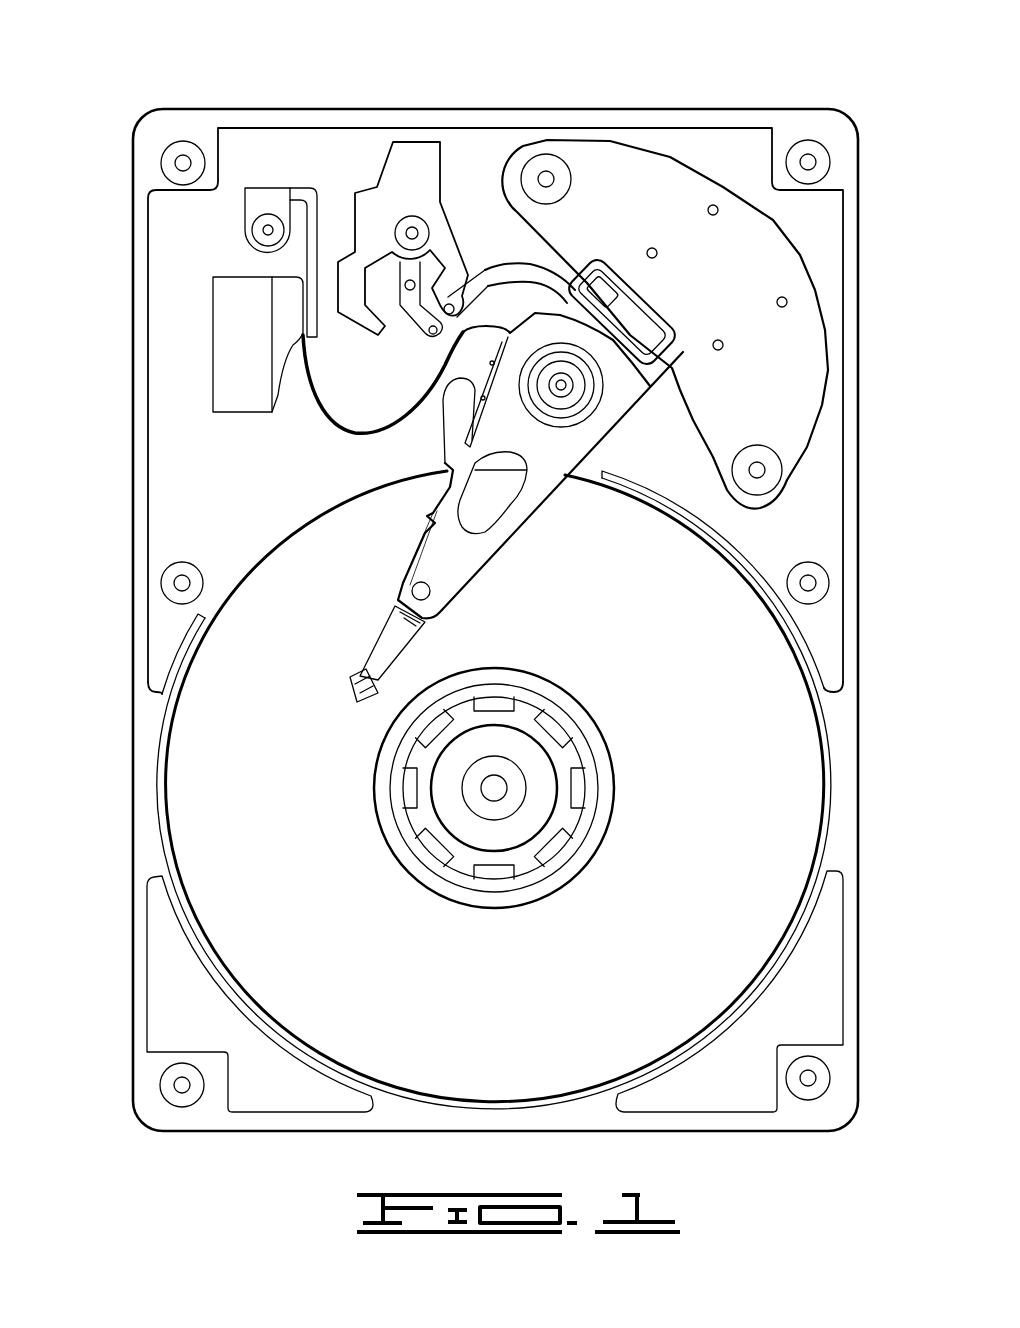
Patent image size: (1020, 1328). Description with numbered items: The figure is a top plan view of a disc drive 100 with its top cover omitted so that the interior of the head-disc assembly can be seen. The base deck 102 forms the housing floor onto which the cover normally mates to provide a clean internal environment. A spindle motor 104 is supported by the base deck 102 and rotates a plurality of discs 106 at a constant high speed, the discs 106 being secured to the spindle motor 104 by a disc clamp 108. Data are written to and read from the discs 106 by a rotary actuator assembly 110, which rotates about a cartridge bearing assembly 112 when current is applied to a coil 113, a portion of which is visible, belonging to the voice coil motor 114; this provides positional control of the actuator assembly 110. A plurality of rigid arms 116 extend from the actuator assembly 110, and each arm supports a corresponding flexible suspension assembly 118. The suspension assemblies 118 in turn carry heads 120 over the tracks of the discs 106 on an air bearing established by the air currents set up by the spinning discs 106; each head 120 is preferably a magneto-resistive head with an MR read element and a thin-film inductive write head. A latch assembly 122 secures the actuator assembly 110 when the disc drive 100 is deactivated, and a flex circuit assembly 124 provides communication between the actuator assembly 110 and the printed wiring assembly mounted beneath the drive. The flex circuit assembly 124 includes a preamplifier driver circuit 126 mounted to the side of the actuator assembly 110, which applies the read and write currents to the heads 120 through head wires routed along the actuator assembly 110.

The disc drive 100 is at (248, 85).
The base deck 102 is at (233, 483).
The spindle motor 104 is at (503, 823).
The discs 106 is at (750, 875).
The disc clamp 108 is at (387, 838).
The rotary actuator assembly 110 is at (535, 459).
The cartridge bearing assembly 112 is at (570, 400).
The coil 113 is at (658, 340).
The voice coil motor 114 is at (600, 215).
The rigid arms 116 is at (430, 567).
The flexible suspension assembly 118 is at (378, 650).
The heads 120 is at (348, 689).
The latch assembly 122 is at (413, 165).
The flex circuit assembly 124 is at (345, 443).
The preamplifier driver circuit 126 is at (442, 437).